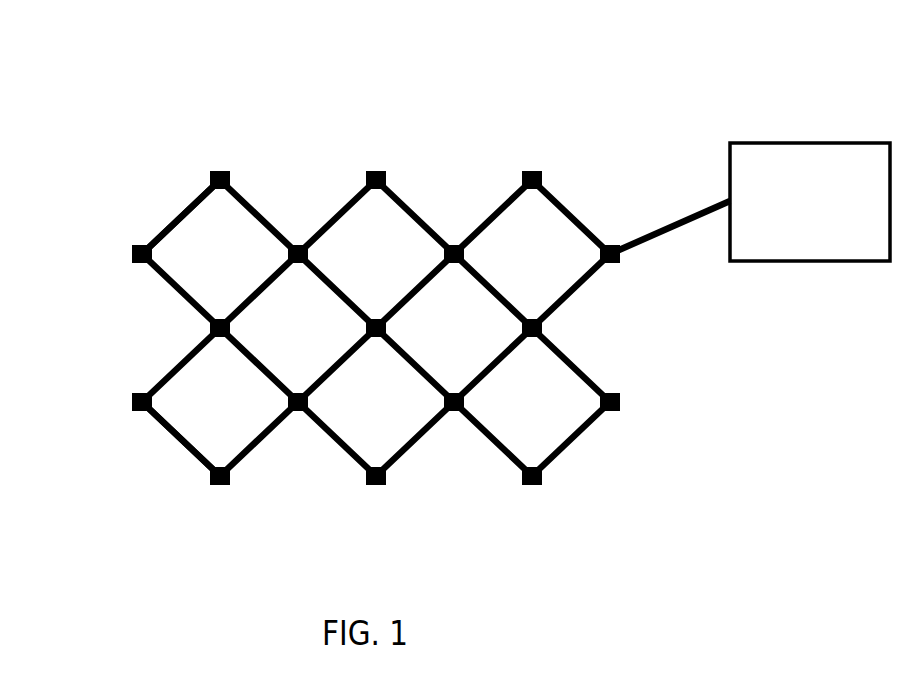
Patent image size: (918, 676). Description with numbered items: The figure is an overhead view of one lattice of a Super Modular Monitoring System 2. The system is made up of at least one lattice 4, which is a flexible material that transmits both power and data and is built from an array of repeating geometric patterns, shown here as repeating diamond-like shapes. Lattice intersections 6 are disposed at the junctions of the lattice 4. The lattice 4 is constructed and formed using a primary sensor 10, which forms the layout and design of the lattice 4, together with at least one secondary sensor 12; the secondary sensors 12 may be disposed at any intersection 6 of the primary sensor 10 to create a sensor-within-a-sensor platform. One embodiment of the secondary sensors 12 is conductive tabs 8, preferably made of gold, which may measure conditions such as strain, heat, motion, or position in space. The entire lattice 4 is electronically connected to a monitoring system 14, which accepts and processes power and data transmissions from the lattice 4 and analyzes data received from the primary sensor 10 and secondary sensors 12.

The Super Modular Monitoring System 2 is at (290, 108).
The lattice 4 is at (184, 446).
The lattice intersection 6 is at (298, 417).
The conductive tabs 8 is at (377, 162).
The primary sensor 10 is at (170, 212).
The secondary sensors 12 is at (623, 408).
The monitoring system 14 is at (810, 202).